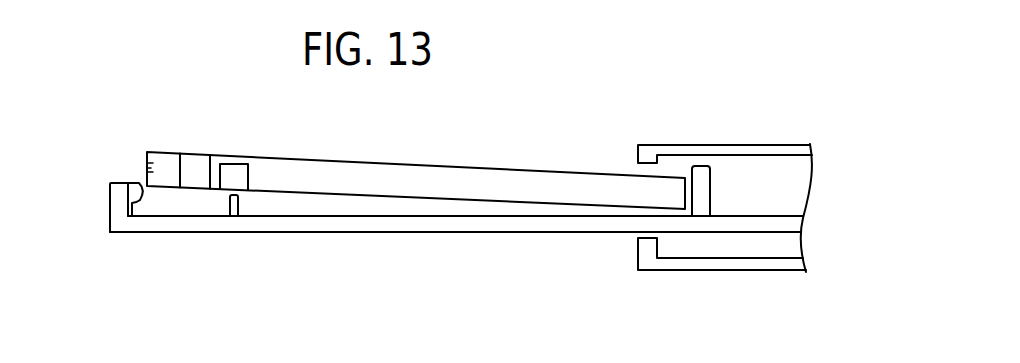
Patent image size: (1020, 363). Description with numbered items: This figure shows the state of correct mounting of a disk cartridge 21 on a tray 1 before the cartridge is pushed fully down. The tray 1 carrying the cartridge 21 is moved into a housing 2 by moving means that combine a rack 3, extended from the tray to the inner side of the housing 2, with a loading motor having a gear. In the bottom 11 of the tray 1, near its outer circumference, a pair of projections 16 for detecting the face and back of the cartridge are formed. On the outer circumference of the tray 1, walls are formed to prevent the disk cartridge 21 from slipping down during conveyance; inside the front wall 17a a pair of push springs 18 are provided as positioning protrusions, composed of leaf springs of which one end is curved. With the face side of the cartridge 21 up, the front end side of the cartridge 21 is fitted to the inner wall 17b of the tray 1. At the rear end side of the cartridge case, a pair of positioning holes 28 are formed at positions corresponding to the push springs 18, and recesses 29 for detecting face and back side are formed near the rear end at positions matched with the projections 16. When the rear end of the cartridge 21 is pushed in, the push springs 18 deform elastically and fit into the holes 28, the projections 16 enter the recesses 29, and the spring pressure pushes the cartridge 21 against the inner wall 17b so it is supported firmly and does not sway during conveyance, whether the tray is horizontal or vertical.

The tray 1 is at (433, 233).
The housing 2 is at (700, 145).
The rack 3 is at (755, 214).
The bottom 11 is at (390, 216).
The projections 16 is at (238, 207).
The front wall 17a is at (120, 213).
The inner wall 17b is at (688, 192).
The push springs 18 is at (142, 186).
The disk cartridge 21 is at (448, 166).
The holes 28 is at (146, 162).
The recesses 29 is at (237, 173).